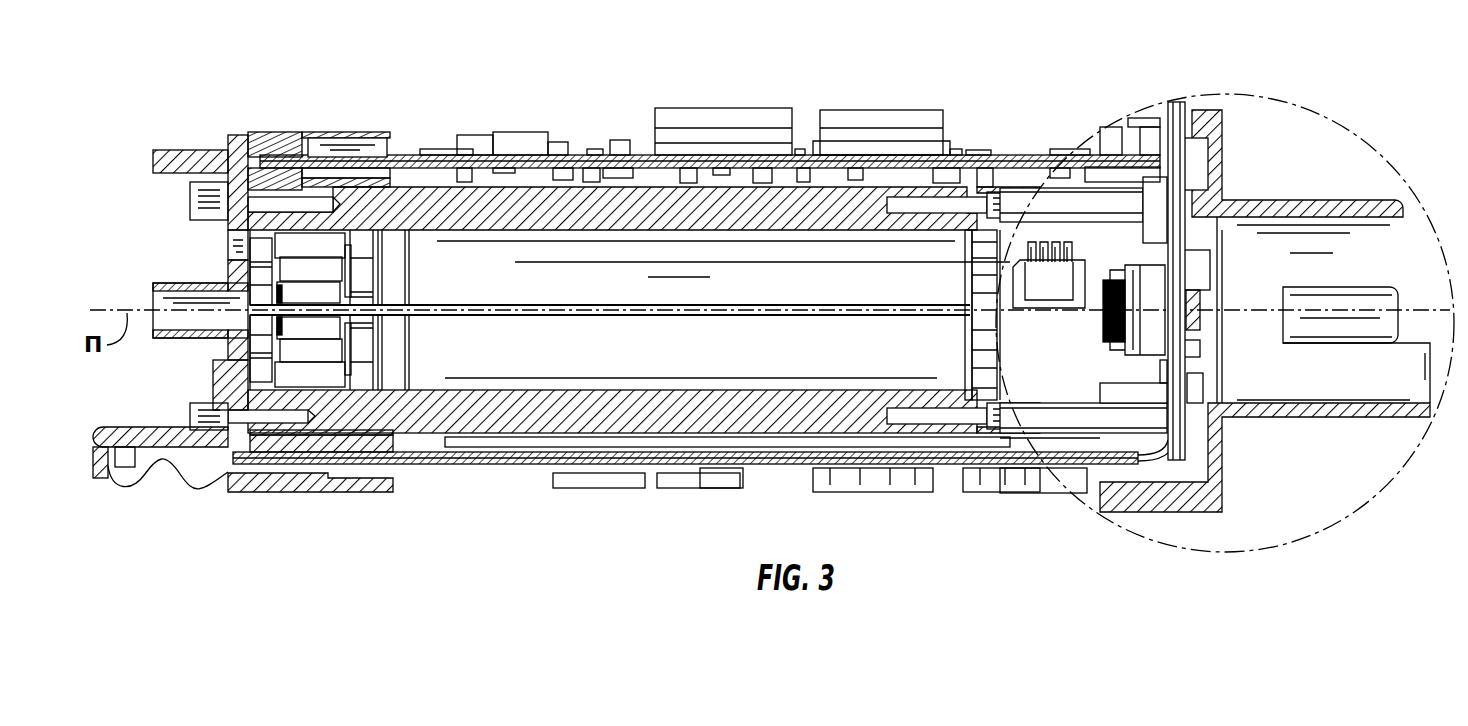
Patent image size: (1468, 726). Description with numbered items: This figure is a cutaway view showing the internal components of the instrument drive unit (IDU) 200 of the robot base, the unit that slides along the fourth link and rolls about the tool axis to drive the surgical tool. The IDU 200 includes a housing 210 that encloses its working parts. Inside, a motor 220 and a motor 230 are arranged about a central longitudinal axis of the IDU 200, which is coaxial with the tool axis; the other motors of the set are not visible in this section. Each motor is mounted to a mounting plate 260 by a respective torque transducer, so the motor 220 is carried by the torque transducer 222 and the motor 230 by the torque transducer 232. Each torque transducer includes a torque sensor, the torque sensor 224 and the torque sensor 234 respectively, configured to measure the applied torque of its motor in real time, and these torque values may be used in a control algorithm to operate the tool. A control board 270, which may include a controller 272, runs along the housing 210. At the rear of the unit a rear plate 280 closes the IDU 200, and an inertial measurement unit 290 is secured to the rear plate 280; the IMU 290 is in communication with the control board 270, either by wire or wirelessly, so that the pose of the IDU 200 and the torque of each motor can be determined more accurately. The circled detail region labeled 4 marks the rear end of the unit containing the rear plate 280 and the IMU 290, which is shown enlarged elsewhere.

The instrument drive unit 200 is at (1065, 89).
The housing 210 is at (557, 155).
The motor 220 is at (625, 253).
The torque transducer 222 is at (328, 240).
The torque sensor 224 is at (310, 250).
The motor 230 is at (650, 358).
The torque transducer 232 is at (327, 383).
The torque sensor 234 is at (309, 368).
The mounting plate 260 is at (240, 253).
The control board 270 is at (798, 187).
The controller 272 is at (720, 187).
The rear plate 280 is at (1172, 193).
The inertial measurement unit 290 is at (1165, 315).
The detail view region 4 is at (1338, 120).